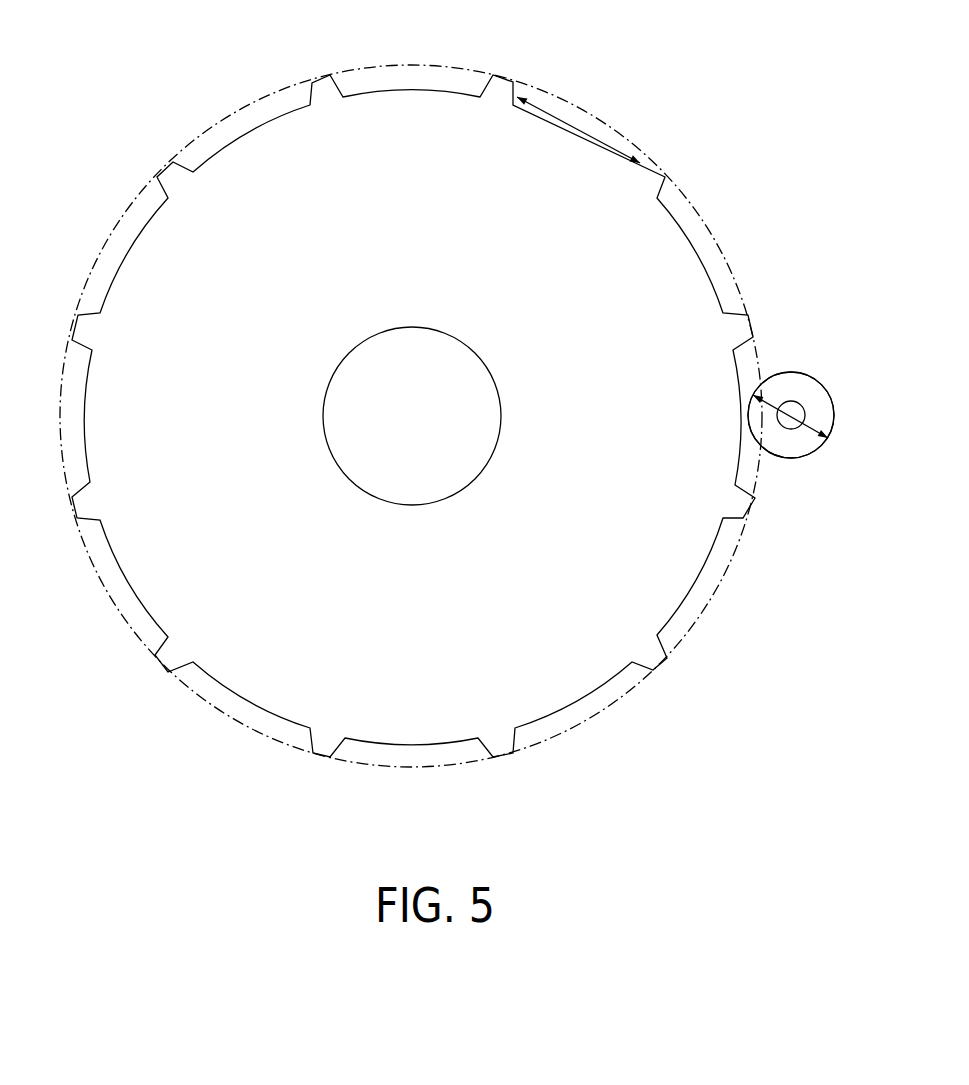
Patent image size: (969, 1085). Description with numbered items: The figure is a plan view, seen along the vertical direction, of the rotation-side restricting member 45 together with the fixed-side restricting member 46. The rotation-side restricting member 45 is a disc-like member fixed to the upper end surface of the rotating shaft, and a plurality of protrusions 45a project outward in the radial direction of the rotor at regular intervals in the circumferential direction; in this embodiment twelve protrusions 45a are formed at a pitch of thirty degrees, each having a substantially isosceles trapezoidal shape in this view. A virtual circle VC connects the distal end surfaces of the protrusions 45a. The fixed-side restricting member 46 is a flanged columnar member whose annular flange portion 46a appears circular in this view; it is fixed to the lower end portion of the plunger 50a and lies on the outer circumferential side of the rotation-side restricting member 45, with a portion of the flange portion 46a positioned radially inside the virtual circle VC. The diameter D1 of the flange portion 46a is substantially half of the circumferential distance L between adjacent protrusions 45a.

The rotation-side restricting member 45 is at (423, 90).
The protrusions 45a is at (322, 72).
The fixed-side restricting member 46 is at (792, 460).
The flange portion 46a is at (791, 415).
The plunger 50a is at (791, 400).
The diameter of the flange portion D1 is at (828, 390).
The distance between the protrusions L is at (585, 117).
The virtual circle VC is at (417, 768).